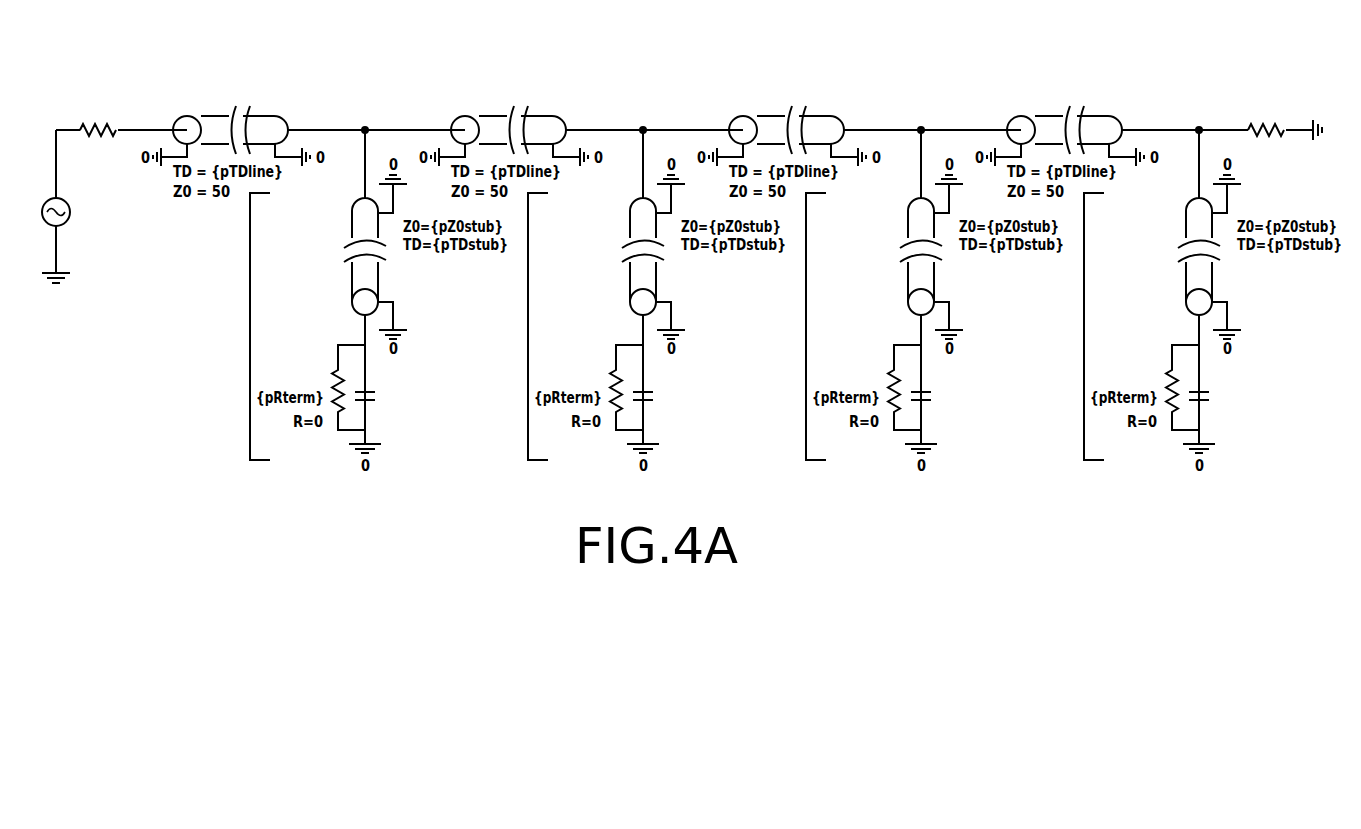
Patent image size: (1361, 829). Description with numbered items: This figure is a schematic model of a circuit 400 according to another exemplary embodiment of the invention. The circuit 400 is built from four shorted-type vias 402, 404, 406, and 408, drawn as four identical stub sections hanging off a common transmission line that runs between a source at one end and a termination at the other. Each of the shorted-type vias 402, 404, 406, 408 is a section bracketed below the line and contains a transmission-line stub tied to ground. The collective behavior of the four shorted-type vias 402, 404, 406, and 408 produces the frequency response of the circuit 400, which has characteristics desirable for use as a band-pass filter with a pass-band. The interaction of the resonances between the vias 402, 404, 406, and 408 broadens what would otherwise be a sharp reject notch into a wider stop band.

The circuit 400 is at (678, 70).
The shorted-type via 402 is at (237, 455).
The shorted-type via 404 is at (515, 455).
The shorted-type via 406 is at (793, 455).
The shorted-type via 408 is at (1071, 455).